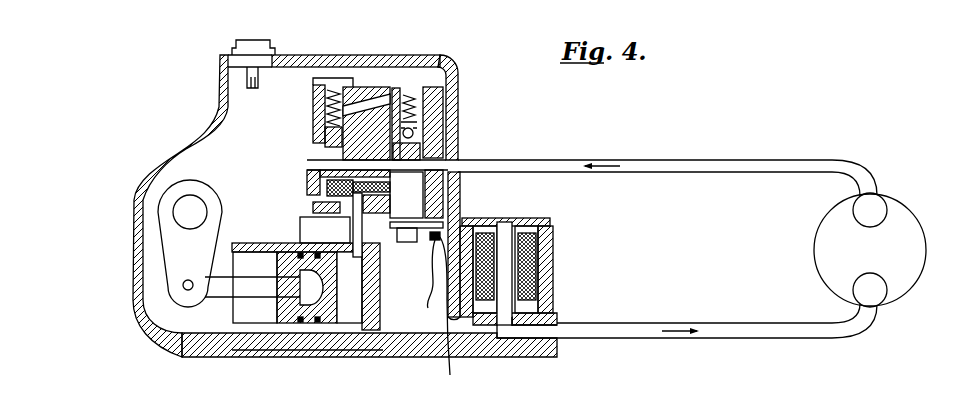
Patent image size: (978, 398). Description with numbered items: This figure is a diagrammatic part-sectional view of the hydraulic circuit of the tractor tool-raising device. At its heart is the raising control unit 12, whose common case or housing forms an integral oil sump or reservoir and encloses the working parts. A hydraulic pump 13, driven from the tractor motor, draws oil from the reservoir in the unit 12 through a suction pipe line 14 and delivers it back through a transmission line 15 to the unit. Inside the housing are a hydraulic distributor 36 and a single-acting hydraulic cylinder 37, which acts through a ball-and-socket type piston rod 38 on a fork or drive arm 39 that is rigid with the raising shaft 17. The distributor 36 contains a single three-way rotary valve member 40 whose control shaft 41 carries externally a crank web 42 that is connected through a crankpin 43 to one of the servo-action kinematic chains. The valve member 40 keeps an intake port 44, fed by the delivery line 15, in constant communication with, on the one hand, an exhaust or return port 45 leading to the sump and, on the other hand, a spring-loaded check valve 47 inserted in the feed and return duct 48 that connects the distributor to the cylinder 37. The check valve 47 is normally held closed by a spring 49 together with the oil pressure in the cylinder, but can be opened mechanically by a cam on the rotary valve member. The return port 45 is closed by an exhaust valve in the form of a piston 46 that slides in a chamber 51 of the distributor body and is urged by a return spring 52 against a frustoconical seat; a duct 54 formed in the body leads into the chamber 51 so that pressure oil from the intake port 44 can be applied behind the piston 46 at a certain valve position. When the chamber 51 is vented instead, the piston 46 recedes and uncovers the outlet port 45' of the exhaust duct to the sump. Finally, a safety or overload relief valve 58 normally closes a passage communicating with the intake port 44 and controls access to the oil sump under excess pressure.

The raising control unit 12 is at (196, 126).
The hydraulic pump 13 is at (910, 257).
The suction pipe line 14 is at (772, 333).
The pipe line or transmission line 15 is at (658, 168).
The raising shaft 17 is at (178, 207).
The hydraulic distributor 36 is at (386, 79).
The single-acting hydraulic cylinder 37 is at (340, 333).
The piston rod 38 is at (222, 288).
The drive arm 39 is at (180, 250).
The rotary valve member 40 is at (400, 205).
The control shaft 41 is at (409, 242).
The crank web 42 is at (425, 284).
The crankpin 43 is at (458, 317).
The intake port 44 is at (430, 168).
The exhaust or return port 45 is at (273, 204).
The outlet port 45' is at (310, 186).
The piston 46 is at (422, 83).
The spring-loaded check valve 47 is at (337, 213).
The feed and return duct 48 is at (352, 232).
The spring 49 is at (345, 196).
The chamber 51 is at (332, 87).
The return spring 52 is at (320, 133).
The duct 54 is at (364, 92).
The safety or overload relief valve 58 is at (418, 106).